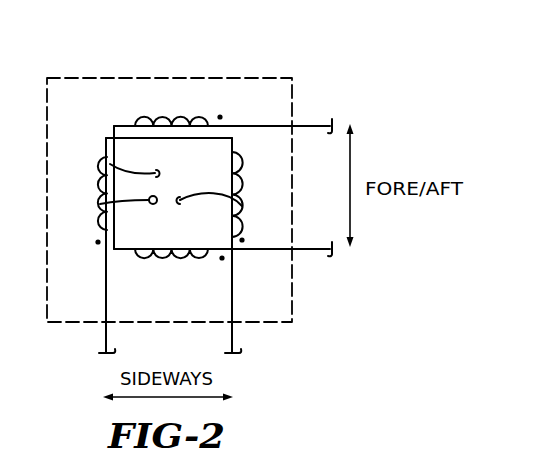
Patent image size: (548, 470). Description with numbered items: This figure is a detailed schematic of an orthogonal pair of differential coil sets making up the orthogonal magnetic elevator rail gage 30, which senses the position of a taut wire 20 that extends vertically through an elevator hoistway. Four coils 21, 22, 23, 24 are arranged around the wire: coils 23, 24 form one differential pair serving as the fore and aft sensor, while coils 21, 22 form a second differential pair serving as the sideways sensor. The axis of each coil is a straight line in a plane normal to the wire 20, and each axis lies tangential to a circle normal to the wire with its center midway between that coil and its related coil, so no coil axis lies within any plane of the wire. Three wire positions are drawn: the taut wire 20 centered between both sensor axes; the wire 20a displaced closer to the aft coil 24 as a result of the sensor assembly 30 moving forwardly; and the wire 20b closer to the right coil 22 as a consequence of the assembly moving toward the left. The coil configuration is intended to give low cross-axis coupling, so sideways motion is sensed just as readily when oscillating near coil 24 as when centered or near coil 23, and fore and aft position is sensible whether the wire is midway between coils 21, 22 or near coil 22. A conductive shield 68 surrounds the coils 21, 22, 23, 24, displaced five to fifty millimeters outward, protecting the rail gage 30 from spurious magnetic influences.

The conductive shield 68 is at (67, 78).
The orthogonal magnetic elevator rail gage 30 is at (252, 65).
The aft coil 24 is at (180, 115).
The coil 23 is at (165, 258).
The coil 21 is at (97, 196).
The right coil 22 is at (240, 183).
The taut wire 20 is at (100, 204).
The taut wire 20a is at (110, 164).
The taut wire 20b is at (242, 206).